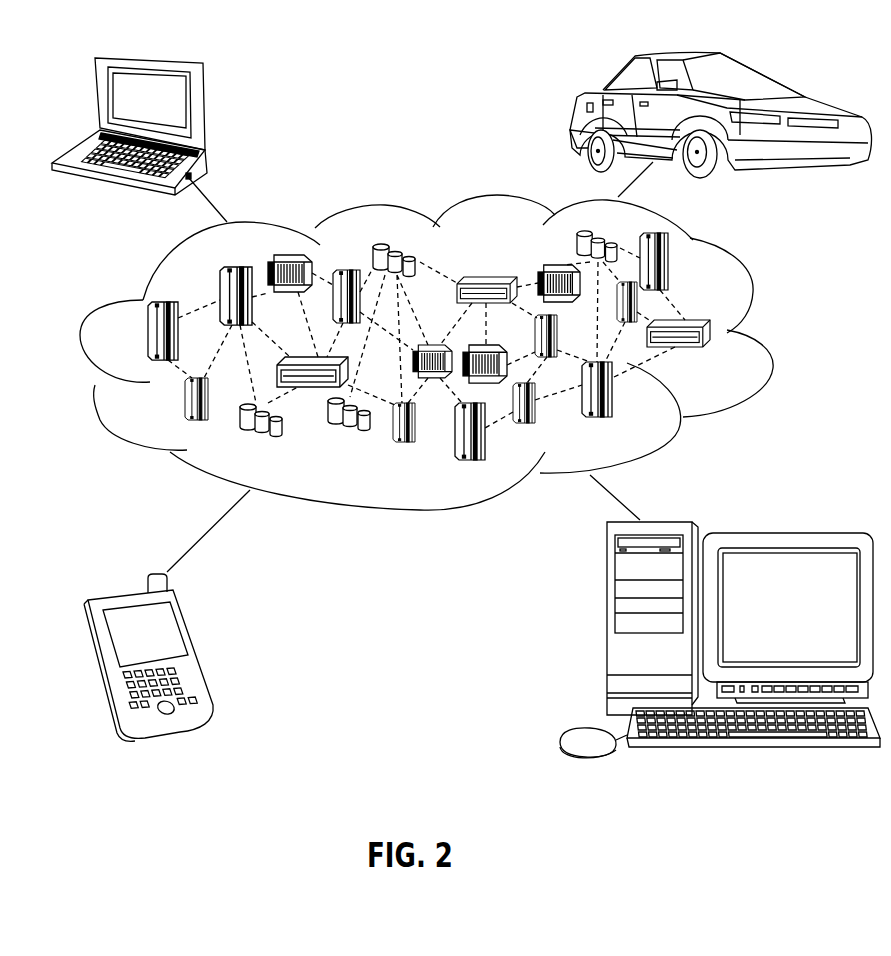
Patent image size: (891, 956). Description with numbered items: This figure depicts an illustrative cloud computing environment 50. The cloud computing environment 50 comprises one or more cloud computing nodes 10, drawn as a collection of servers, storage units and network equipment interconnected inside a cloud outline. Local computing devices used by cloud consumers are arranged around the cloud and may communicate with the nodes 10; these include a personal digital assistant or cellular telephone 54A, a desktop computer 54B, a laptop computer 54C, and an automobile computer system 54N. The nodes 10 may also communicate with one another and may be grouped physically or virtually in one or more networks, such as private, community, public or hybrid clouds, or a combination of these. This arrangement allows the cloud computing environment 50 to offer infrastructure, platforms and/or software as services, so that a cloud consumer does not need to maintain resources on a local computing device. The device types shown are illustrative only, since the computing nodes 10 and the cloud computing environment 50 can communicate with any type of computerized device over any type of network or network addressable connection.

The cloud computing nodes 10 is at (466, 405).
The cloud computing environment 50 is at (757, 297).
The personal digital assistant or cellular telephone 54A is at (205, 647).
The desktop computer 54B is at (605, 628).
The laptop computer 54C is at (205, 103).
The automobile computer system 54N is at (577, 108).